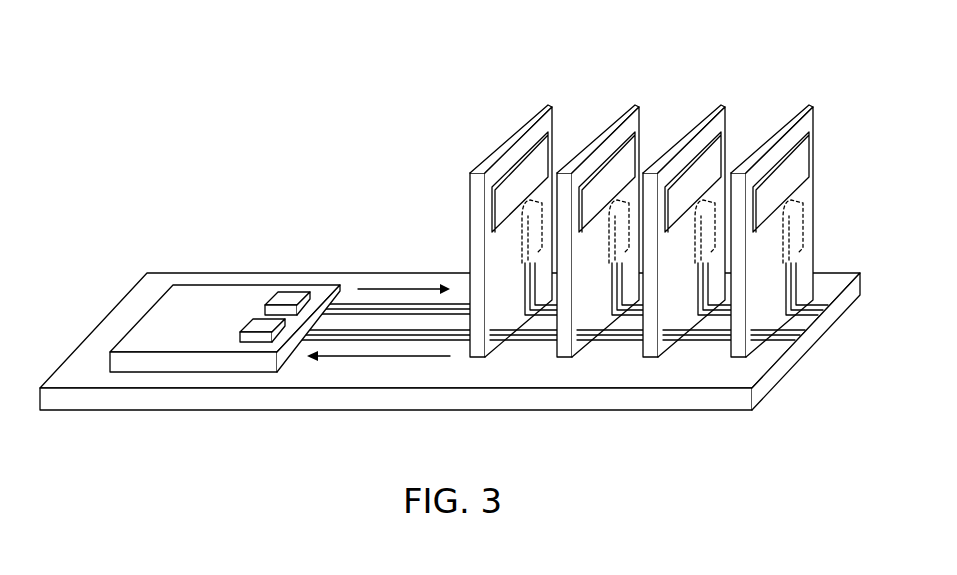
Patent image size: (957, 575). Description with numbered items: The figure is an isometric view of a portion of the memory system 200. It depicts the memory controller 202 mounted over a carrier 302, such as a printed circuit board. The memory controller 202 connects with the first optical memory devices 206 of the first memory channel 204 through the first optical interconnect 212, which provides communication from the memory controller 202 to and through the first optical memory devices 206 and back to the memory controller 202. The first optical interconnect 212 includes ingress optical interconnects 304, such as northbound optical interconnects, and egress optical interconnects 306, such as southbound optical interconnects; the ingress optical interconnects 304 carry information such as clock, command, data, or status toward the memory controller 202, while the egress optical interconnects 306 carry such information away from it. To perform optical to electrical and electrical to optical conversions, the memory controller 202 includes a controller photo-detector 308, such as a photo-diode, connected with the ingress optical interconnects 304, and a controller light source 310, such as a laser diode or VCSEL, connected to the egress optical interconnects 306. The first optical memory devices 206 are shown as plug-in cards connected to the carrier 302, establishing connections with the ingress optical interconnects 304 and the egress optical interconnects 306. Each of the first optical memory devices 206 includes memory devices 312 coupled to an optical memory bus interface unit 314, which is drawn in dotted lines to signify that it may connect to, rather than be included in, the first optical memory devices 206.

The memory system 200 is at (183, 122).
The memory controller 202 is at (205, 328).
The first memory channel 204 is at (532, 70).
The first optical memory devices 206 is at (515, 137).
The first optical interconnect 212 is at (367, 312).
The carrier 302 is at (104, 383).
The ingress optical interconnects 304 is at (372, 307).
The egress optical interconnects 306 is at (403, 307).
The controller photo-detector 308 is at (258, 328).
The controller light source 310 is at (291, 298).
The memory devices 312 is at (804, 231).
The optical memory bus interface unit 314 is at (795, 225).